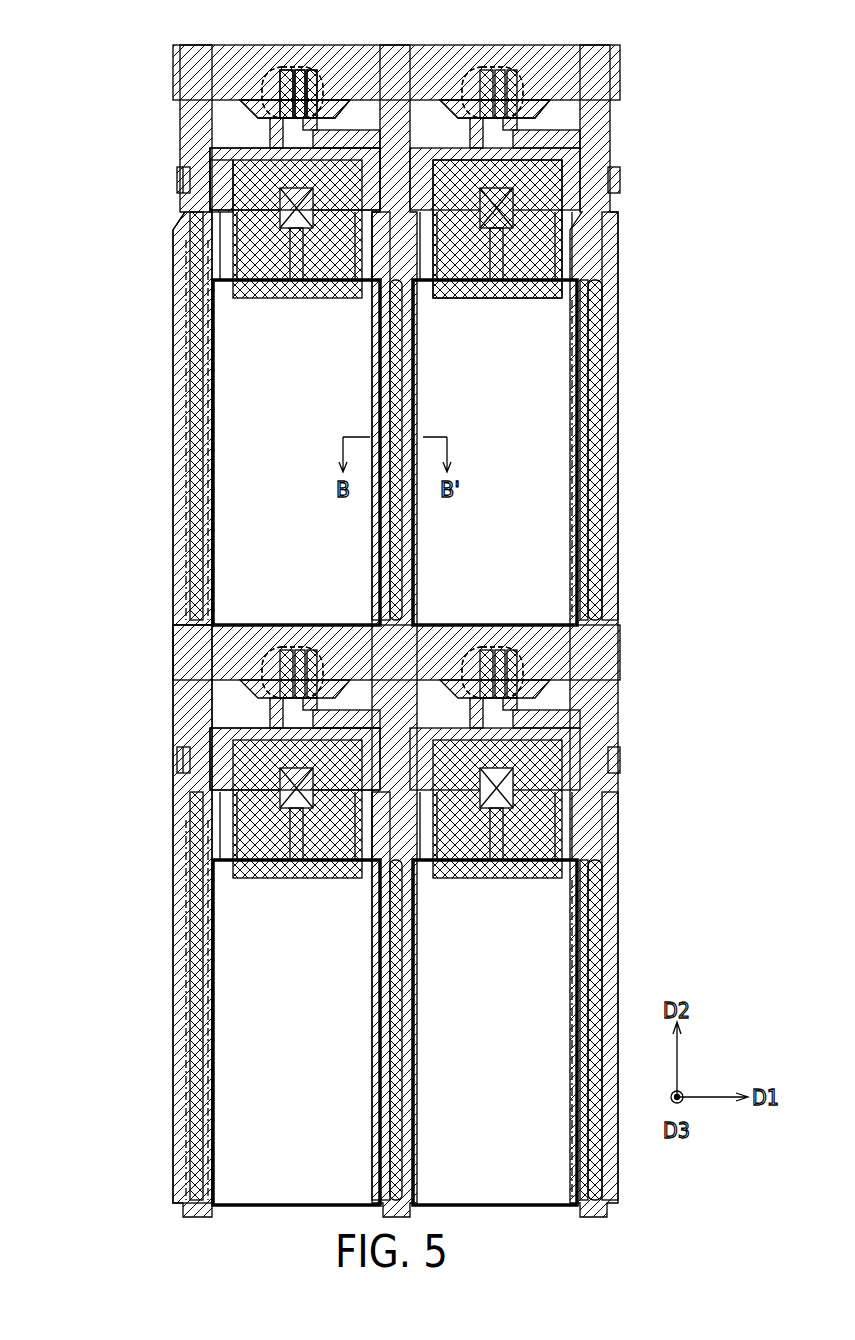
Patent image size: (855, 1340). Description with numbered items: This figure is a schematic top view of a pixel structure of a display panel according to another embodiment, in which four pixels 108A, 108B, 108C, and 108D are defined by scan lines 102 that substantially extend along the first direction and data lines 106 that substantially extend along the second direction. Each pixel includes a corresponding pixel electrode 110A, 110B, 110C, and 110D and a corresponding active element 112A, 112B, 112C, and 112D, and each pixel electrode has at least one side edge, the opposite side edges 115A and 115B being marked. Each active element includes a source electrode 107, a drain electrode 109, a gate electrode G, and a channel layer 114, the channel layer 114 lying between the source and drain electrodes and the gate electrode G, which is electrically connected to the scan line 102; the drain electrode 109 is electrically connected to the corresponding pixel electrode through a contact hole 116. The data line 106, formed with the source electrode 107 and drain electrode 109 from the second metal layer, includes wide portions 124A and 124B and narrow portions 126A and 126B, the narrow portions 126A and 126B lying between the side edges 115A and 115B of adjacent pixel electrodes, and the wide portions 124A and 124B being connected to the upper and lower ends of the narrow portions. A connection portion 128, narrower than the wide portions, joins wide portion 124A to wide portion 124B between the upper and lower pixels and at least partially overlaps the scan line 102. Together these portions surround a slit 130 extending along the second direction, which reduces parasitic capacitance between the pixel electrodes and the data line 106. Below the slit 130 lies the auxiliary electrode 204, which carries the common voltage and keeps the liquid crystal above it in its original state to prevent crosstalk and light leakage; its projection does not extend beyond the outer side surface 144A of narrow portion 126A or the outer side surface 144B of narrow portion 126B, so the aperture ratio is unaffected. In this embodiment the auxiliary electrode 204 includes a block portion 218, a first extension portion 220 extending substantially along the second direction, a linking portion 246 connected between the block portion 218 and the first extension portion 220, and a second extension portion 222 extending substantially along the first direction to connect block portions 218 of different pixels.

The scan line 102 is at (177, 50).
The data line 106 is at (330, 140).
The source electrode 107 is at (286, 70).
The drain electrode 109 is at (299, 70).
The channel layer 114 is at (313, 70).
The gate electrode G is at (300, 100).
The active element 112A is at (262, 90).
The active element 112B is at (522, 93).
The active element 112C is at (262, 683).
The active element 112D is at (522, 680).
The contact hole 116 is at (562, 168).
The connection portion 128 is at (215, 152).
The block portion 218 is at (245, 162).
The auxiliary electrode 204 is at (177, 178).
The second extension portion 222 is at (182, 190).
The wide portion 124A is at (178, 222).
The wide portion 124B is at (178, 627).
The linking portion 246 is at (614, 206).
The pixel 108A is at (160, 324).
The pixel 108B is at (626, 352).
The pixel 108C is at (160, 1027).
The pixel 108D is at (626, 958).
The slit 130 is at (197, 362).
The first extension portion 220 is at (598, 320).
The side edge 115A is at (408, 400).
The side edge 115B is at (580, 398).
The pixel electrode 110A is at (242, 424).
The pixel electrode 110B is at (548, 420).
The pixel electrode 110C is at (242, 912).
The pixel electrode 110D is at (548, 912).
The narrow portion 126A is at (185, 465).
The narrow portion 126B is at (210, 497).
The outer side surface 144A is at (540, 500).
The outer side surface 144B is at (618, 460).